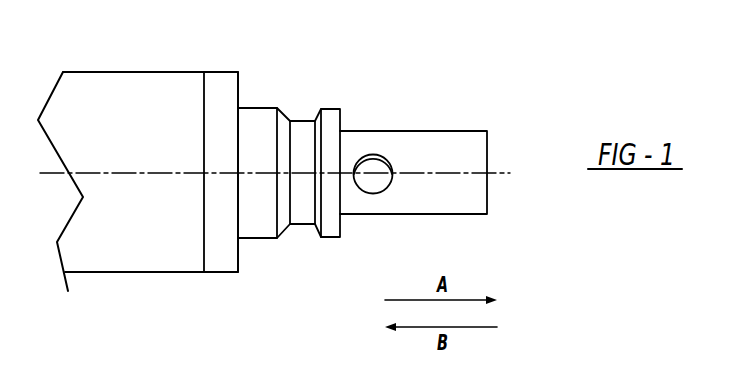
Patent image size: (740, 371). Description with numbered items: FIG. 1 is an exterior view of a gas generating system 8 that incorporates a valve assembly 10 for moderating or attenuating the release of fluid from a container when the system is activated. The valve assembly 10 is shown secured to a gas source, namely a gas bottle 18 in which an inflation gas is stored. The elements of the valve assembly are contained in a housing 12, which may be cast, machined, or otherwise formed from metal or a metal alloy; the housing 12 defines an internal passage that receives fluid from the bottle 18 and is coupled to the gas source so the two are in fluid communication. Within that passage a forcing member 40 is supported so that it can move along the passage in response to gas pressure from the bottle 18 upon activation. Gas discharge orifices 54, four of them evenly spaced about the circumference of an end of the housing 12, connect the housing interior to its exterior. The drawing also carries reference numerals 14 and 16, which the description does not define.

The gas generating system 8 is at (58, 53).
The gas bottle 18 is at (162, 89).
The valve assembly 10 is at (238, 72).
The flange 14 is at (222, 248).
The housing 12 is at (258, 123).
The pin / pilot 16 is at (478, 131).
The forcing member 40 is at (377, 186).
The gas discharge orifices 54 is at (377, 154).